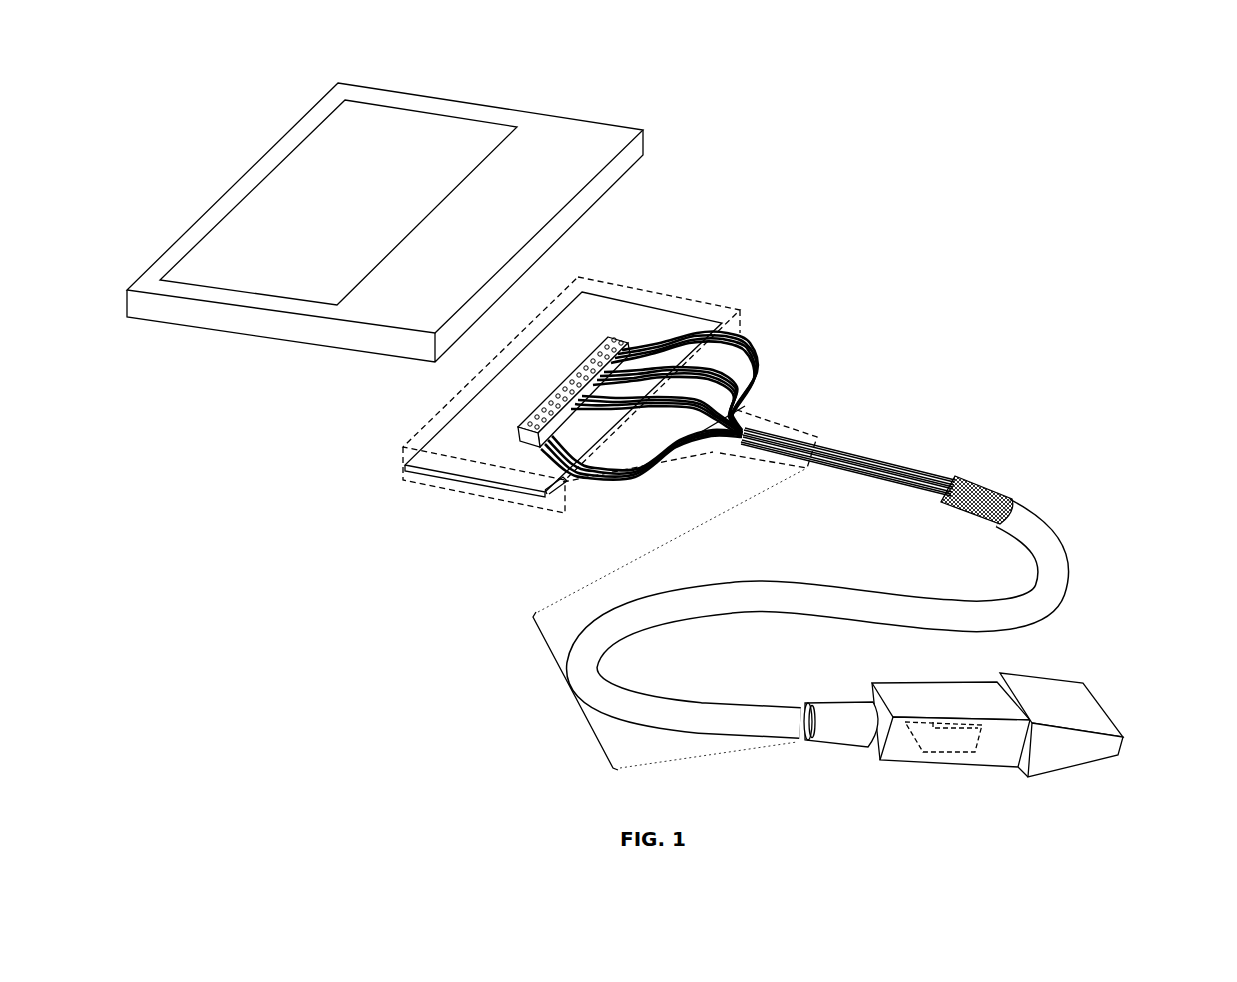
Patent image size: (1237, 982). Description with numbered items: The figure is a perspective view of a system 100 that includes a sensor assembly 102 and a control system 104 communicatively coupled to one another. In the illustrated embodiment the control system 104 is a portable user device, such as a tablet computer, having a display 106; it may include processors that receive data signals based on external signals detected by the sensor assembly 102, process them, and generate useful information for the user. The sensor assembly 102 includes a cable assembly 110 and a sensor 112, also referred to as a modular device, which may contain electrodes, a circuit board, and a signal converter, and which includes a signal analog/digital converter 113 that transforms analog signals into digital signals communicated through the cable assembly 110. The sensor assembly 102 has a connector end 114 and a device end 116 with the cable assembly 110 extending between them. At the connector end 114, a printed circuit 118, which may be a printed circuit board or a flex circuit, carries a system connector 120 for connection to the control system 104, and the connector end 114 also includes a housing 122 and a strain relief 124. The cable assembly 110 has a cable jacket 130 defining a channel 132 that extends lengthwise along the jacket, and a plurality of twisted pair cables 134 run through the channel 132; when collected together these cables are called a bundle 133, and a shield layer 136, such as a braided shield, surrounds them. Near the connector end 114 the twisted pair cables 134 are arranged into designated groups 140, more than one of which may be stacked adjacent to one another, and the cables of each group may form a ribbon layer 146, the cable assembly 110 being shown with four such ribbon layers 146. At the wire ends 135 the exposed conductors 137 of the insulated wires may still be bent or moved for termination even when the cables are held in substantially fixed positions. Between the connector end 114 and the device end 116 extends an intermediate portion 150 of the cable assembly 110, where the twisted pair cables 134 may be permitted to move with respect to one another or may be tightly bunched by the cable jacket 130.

The system 100 is at (827, 168).
The sensor assembly 102 is at (986, 381).
The control system 104 is at (532, 158).
The display 106 is at (378, 173).
The cable assembly 110 is at (1047, 563).
The sensor 112 is at (952, 682).
The signal analog/digital converter 113 is at (955, 737).
The connector end 114 is at (465, 509).
The device end 116 is at (1109, 700).
The printed circuit 118 is at (432, 475).
The system connector 120 is at (595, 368).
The housing 122 is at (640, 287).
The strain relief 124 is at (792, 423).
The cable jacket 130 is at (1007, 502).
The channel 132 is at (986, 527).
The bundle 133 is at (849, 456).
The twisted pair cables 134 is at (877, 449).
The wire ends 135 is at (565, 478).
The shield layer 136 is at (977, 483).
The exposed conductors 137 is at (567, 482).
The designated groups 140 is at (688, 425).
The ribbon layer 146 is at (673, 473).
The intermediate portion 150 is at (570, 707).